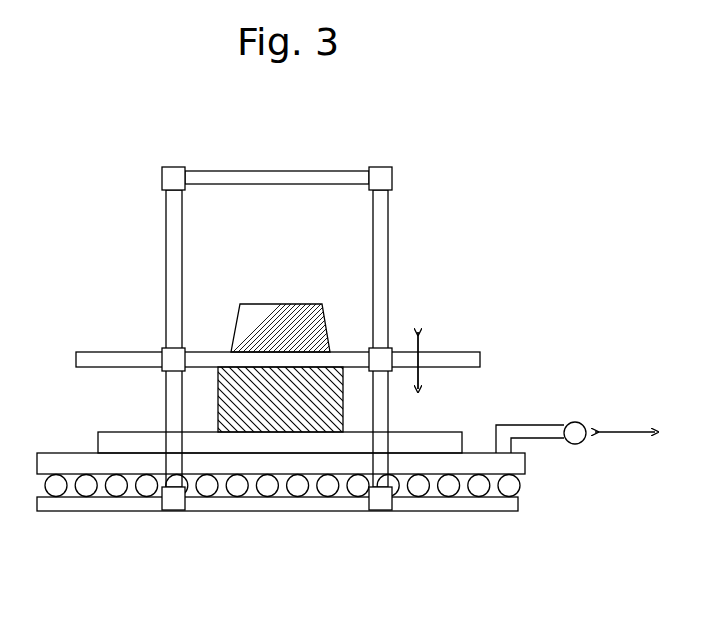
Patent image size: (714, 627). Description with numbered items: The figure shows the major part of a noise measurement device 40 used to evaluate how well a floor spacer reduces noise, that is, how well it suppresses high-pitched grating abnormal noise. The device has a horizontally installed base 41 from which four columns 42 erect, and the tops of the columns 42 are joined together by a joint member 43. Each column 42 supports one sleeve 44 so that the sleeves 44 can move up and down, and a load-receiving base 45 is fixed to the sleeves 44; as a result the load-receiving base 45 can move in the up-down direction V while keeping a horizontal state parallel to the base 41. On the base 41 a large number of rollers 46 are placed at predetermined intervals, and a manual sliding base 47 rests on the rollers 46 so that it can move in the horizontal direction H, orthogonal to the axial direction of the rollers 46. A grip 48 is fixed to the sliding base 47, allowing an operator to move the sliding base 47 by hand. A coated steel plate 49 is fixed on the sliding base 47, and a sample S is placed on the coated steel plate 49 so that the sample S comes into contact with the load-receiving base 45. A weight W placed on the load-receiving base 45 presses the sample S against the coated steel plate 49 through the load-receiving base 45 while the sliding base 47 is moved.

The noise measurement device 40 is at (70, 142).
The base 41 is at (102, 505).
The columns 42 is at (166, 228).
The joint member 43 is at (248, 171).
The sleeve 44 is at (162, 352).
The load-receiving base 45 is at (455, 352).
The rollers 46 is at (292, 494).
The sliding base 47 is at (443, 463).
The grip 48 is at (575, 422).
The coated steel plate 49 is at (110, 443).
The weight W is at (237, 320).
The sample S is at (243, 398).
The up-down direction V is at (428, 378).
The horizontal direction H is at (635, 437).